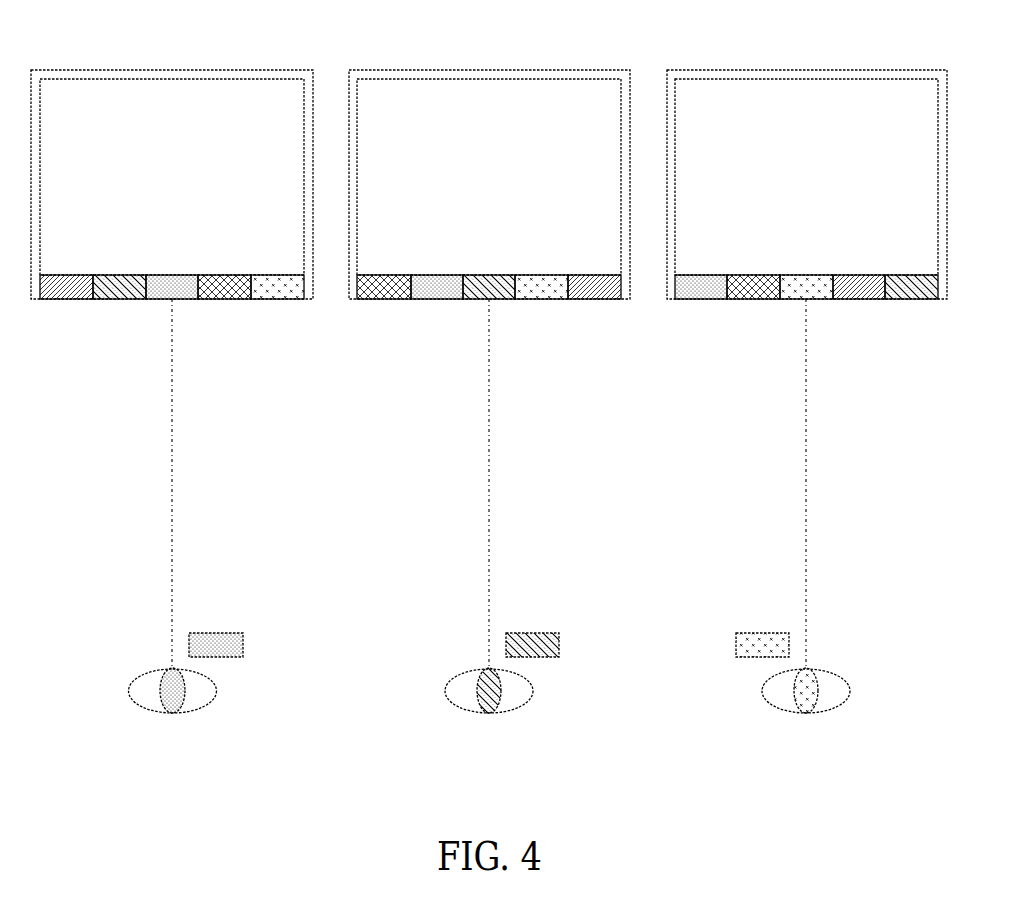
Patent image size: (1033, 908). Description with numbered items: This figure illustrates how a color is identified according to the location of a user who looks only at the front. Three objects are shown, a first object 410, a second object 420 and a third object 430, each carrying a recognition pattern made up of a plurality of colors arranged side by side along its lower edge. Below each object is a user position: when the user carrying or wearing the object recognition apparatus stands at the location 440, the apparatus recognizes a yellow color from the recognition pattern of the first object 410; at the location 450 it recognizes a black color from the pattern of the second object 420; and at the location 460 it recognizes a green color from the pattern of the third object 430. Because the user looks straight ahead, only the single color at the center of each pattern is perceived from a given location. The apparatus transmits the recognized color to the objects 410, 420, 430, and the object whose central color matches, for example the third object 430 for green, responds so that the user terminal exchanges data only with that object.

The first object 410 is at (172, 68).
The second object 420 is at (487, 68).
The third object 430 is at (805, 68).
The location 440 is at (181, 712).
The location 450 is at (498, 712).
The location 460 is at (815, 712).